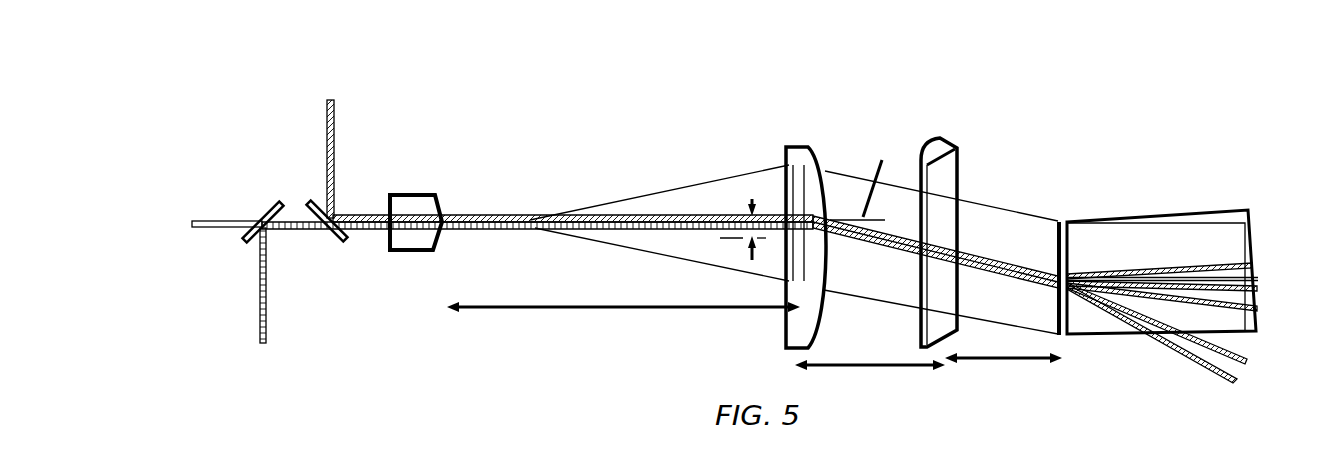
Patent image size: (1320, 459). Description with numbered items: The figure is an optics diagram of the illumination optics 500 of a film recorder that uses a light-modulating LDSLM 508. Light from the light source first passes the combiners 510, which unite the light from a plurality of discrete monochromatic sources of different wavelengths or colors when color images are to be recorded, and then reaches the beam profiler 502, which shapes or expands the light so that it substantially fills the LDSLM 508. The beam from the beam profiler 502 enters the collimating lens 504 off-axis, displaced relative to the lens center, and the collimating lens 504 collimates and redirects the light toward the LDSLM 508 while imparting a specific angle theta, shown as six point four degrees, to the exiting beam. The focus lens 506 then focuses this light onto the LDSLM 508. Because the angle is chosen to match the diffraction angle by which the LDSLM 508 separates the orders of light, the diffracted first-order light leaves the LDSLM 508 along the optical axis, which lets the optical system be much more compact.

The illumination optics 500 is at (745, 225).
The beam profiler 502 is at (436, 196).
The collimating lens 504 is at (818, 158).
The focus lens 506 is at (958, 178).
The LDSLM 508 is at (1063, 336).
The combiners 510 is at (341, 242).